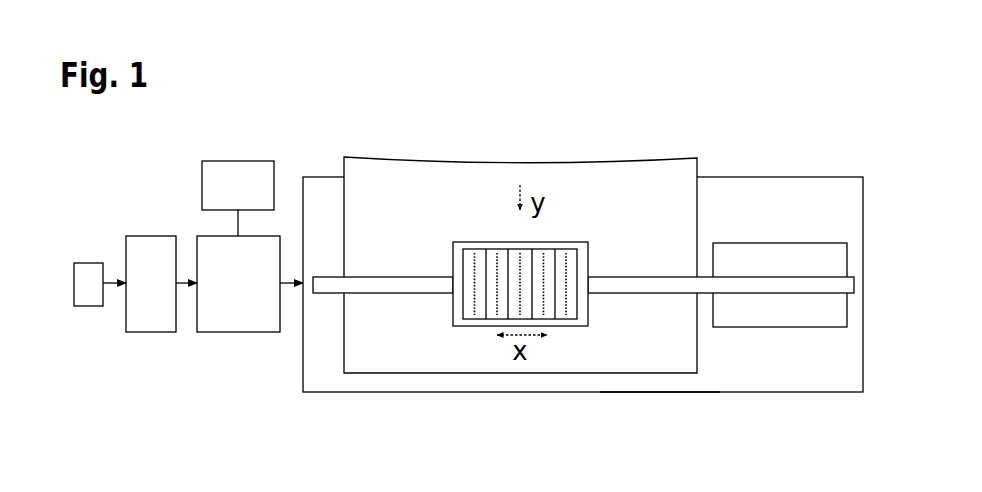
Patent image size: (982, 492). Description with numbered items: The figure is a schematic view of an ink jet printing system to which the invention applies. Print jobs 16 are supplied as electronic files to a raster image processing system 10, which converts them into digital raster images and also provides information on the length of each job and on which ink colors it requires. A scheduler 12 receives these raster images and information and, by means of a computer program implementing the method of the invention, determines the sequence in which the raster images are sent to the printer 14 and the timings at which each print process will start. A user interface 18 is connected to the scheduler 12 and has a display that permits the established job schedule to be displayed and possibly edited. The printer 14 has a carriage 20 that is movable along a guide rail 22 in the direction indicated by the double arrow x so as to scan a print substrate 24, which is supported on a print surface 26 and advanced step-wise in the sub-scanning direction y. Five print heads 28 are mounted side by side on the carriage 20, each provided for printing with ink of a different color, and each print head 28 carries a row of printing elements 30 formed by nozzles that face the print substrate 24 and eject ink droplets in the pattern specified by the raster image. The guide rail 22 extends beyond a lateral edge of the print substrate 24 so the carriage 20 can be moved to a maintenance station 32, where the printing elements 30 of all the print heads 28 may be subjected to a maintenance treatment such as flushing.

The raster image processing system 10 is at (153, 325).
The scheduler 12 is at (232, 326).
The printer 14 is at (543, 393).
The print jobs 16 is at (87, 309).
The user interface 18 is at (243, 172).
The carriage 20 is at (458, 325).
The guide rail 22 is at (388, 283).
The print substrate 24 is at (623, 177).
The print surface 26 is at (628, 382).
The print heads 28 is at (578, 307).
The printing elements 30 is at (580, 255).
The maintenance station 32 is at (788, 316).